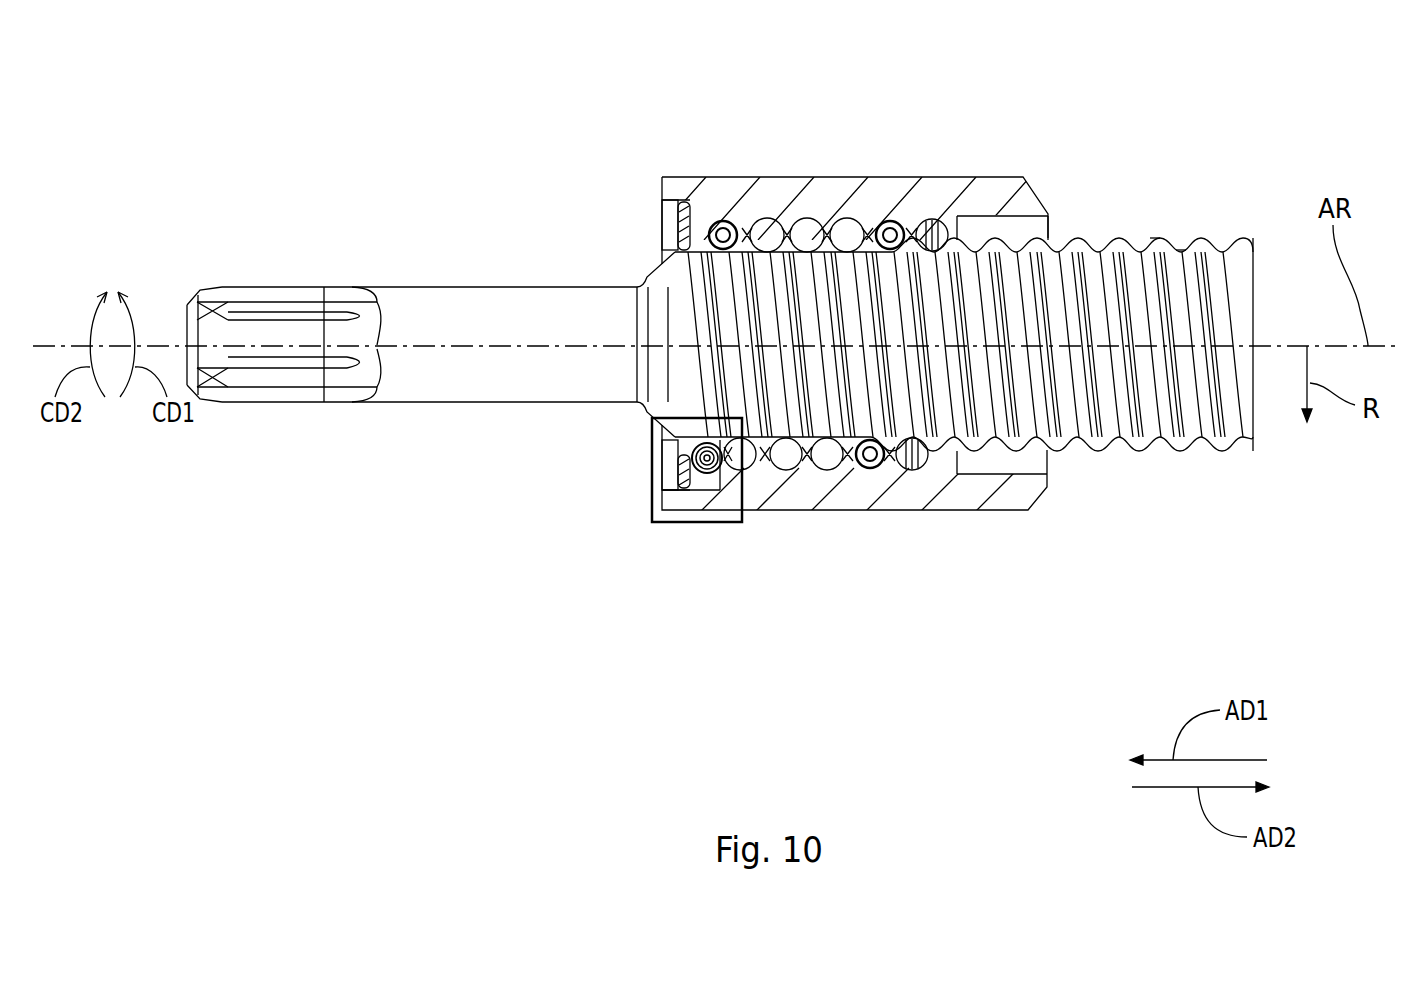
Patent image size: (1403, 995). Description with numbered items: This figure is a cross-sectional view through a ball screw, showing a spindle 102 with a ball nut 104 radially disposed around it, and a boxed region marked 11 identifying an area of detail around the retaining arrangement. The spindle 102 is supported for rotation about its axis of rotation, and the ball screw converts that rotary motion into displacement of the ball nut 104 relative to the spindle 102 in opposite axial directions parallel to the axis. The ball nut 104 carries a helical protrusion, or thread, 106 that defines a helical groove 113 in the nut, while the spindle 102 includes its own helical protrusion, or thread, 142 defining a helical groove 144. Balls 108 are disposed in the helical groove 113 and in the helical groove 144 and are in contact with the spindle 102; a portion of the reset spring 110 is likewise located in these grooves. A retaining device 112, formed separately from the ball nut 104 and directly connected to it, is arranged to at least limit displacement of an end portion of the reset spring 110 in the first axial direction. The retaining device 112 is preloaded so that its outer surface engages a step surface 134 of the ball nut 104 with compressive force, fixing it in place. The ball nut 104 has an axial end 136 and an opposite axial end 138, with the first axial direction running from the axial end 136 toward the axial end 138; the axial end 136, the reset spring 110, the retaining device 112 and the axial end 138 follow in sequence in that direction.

The spindle 102 is at (440, 275).
The ball nut 104 is at (955, 165).
The helical protrusion 106 is at (722, 470).
The balls 108 is at (787, 470).
The reset spring 110 is at (724, 220).
The retaining device 112 is at (657, 220).
The helical groove 113 is at (777, 465).
The step surface 134 is at (681, 238).
The axial end 136 is at (1049, 227).
The axial end 138 is at (660, 187).
The helical protrusion 142 is at (1158, 242).
The helical groove 144 is at (1180, 242).
The detail view boundary 11 is at (651, 462).